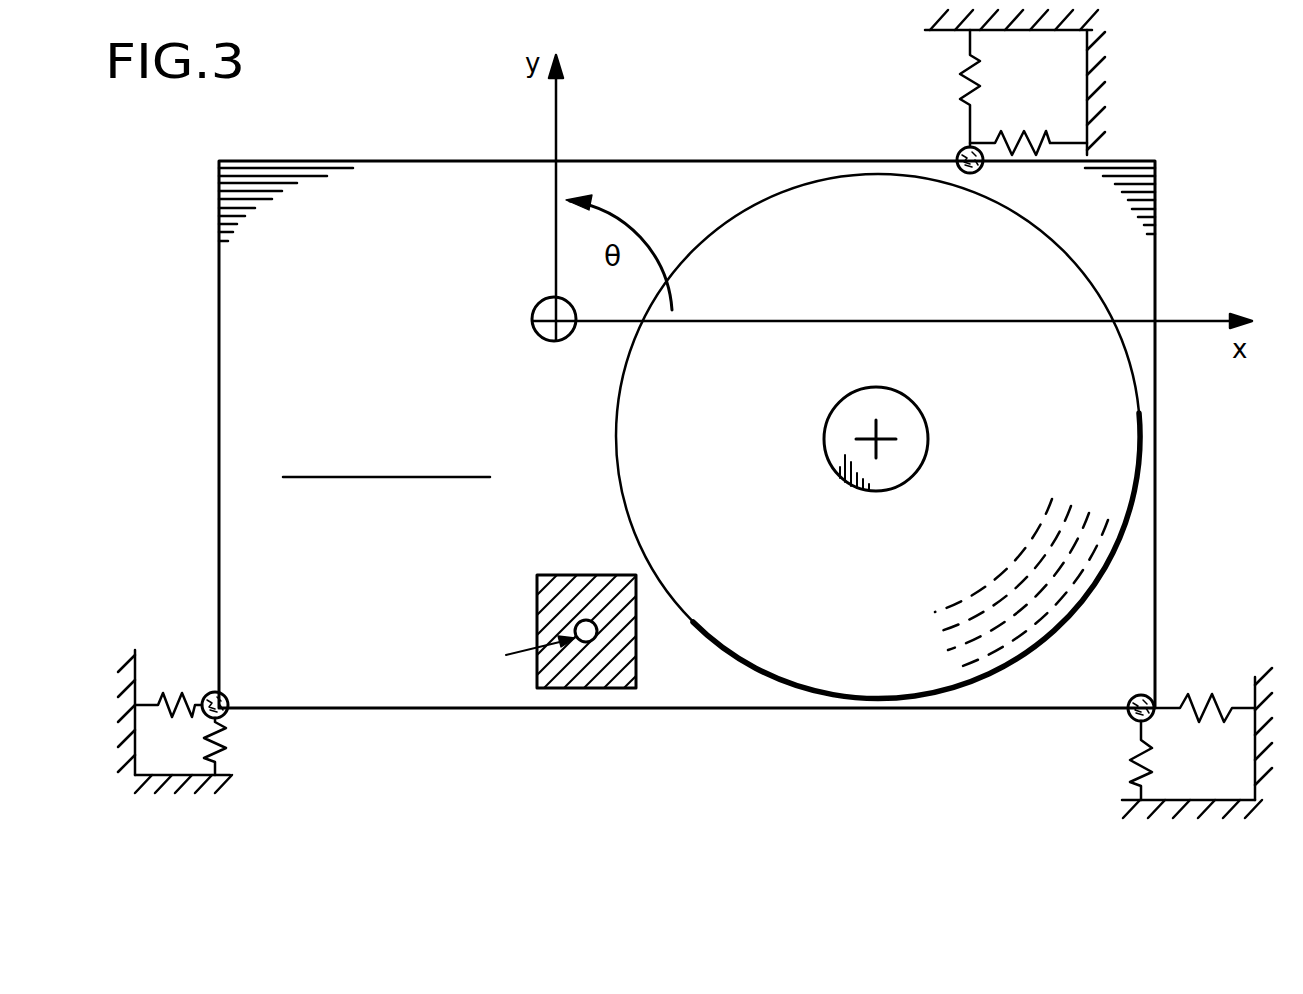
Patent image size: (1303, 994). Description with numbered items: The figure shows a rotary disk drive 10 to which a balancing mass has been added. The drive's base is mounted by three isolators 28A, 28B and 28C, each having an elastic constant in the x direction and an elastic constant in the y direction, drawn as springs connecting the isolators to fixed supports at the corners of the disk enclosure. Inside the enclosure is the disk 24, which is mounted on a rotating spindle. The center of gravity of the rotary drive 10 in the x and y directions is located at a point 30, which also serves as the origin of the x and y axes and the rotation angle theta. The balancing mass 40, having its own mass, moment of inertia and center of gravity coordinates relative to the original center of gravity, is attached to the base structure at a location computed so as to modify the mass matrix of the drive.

The rotary disk drive 10 is at (1188, 202).
The disk 24 is at (895, 268).
The isolator 28A is at (224, 694).
The isolator 28B is at (1135, 696).
The isolator 28C is at (961, 146).
The center of gravity point 30 is at (532, 296).
The mass 40 is at (537, 610).